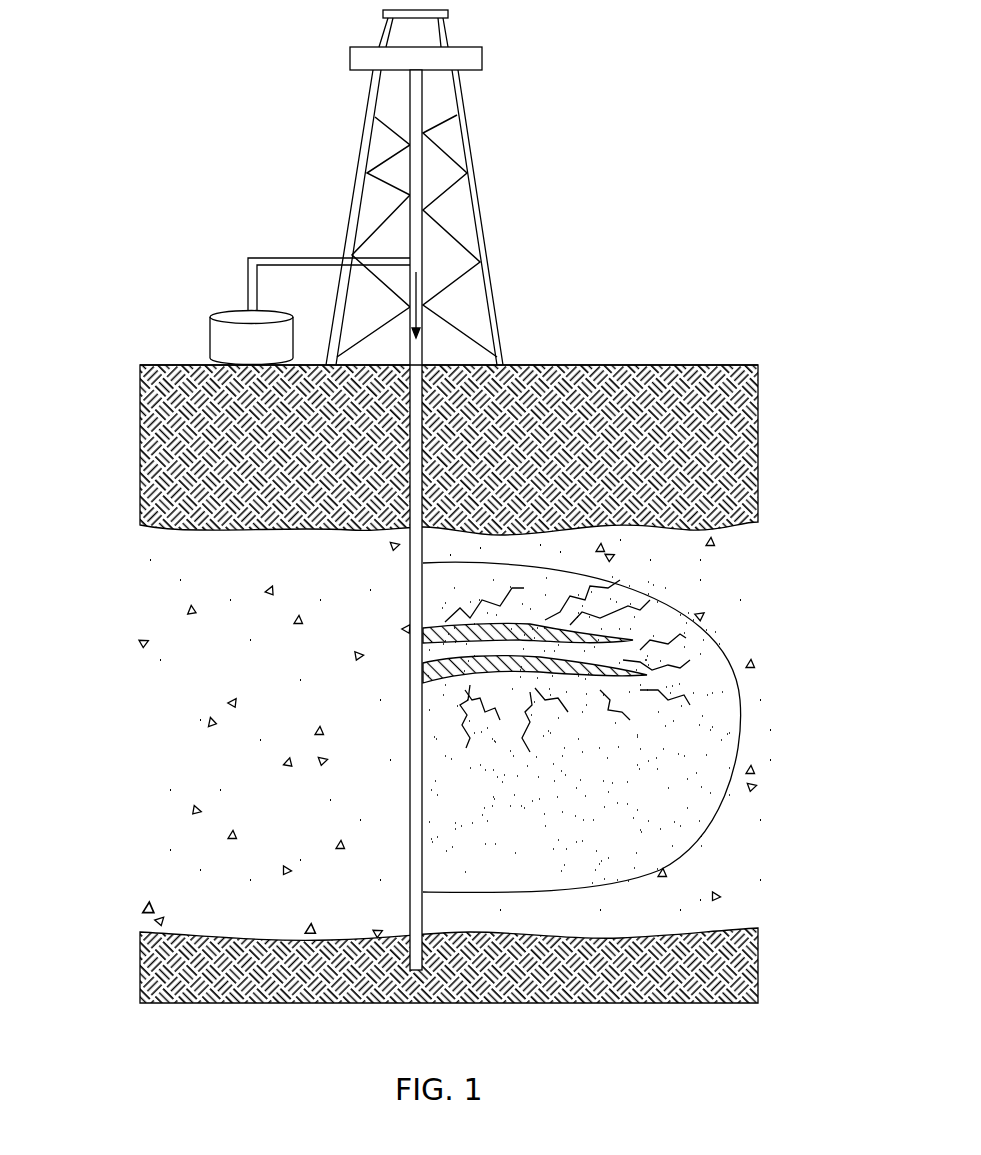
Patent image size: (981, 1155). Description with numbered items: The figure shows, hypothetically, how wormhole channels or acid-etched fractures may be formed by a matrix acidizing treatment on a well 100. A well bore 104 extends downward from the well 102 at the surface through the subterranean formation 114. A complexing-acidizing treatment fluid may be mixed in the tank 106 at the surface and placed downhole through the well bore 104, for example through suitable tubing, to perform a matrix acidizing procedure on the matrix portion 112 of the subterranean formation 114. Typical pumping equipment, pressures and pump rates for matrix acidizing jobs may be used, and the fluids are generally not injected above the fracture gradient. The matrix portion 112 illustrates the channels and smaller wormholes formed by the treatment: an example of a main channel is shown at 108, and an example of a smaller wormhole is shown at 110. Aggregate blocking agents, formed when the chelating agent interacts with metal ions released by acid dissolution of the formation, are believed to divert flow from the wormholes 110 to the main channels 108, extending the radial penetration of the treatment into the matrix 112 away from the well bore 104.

The well 100 is at (672, 74).
The well 102 is at (484, 236).
The well bore 104 is at (424, 437).
The tank 106 is at (210, 338).
The main channel 108 is at (558, 683).
The wormhole 110 is at (520, 712).
The matrix portion 112 is at (666, 601).
The subterranean formation 114 is at (118, 365).